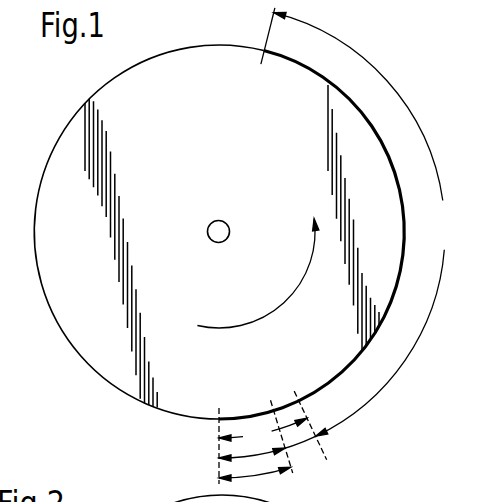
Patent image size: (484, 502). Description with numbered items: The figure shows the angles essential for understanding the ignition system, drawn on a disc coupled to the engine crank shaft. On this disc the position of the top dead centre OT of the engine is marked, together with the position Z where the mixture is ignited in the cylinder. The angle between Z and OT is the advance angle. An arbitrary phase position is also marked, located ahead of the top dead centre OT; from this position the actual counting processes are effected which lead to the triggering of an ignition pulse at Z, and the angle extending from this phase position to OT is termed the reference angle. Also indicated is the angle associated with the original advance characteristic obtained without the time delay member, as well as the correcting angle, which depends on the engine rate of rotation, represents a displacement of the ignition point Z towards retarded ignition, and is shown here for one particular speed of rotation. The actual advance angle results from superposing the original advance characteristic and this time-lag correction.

The top dead centre OT is at (219, 435).
The ignition point Z is at (278, 427).